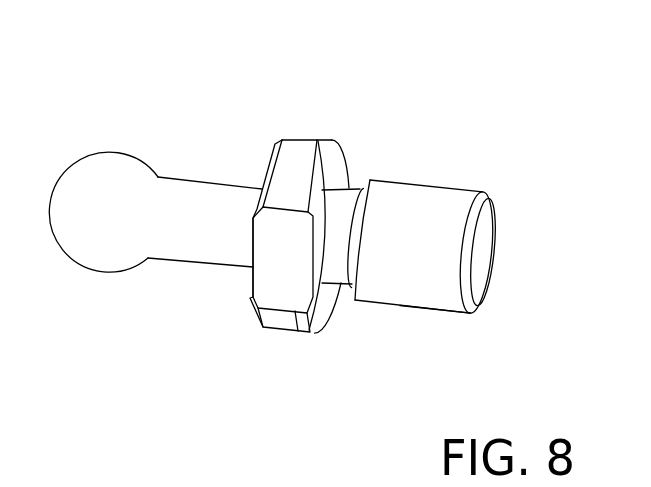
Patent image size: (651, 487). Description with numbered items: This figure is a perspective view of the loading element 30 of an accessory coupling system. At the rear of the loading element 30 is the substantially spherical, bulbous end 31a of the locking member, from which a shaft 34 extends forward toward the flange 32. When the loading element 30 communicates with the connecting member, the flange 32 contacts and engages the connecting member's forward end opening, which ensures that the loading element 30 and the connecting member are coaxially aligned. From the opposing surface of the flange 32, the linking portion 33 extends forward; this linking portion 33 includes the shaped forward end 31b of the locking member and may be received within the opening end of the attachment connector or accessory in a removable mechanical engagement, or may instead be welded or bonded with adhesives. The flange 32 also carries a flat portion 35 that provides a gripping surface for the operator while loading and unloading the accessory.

The loading element 30 is at (413, 81).
The bulbous end 31a is at (92, 152).
The shaped forward end 31b is at (407, 307).
The flange 32 is at (300, 137).
The linking portion 33 is at (458, 188).
The shaft 34 is at (195, 260).
The flat portion 35 is at (298, 331).